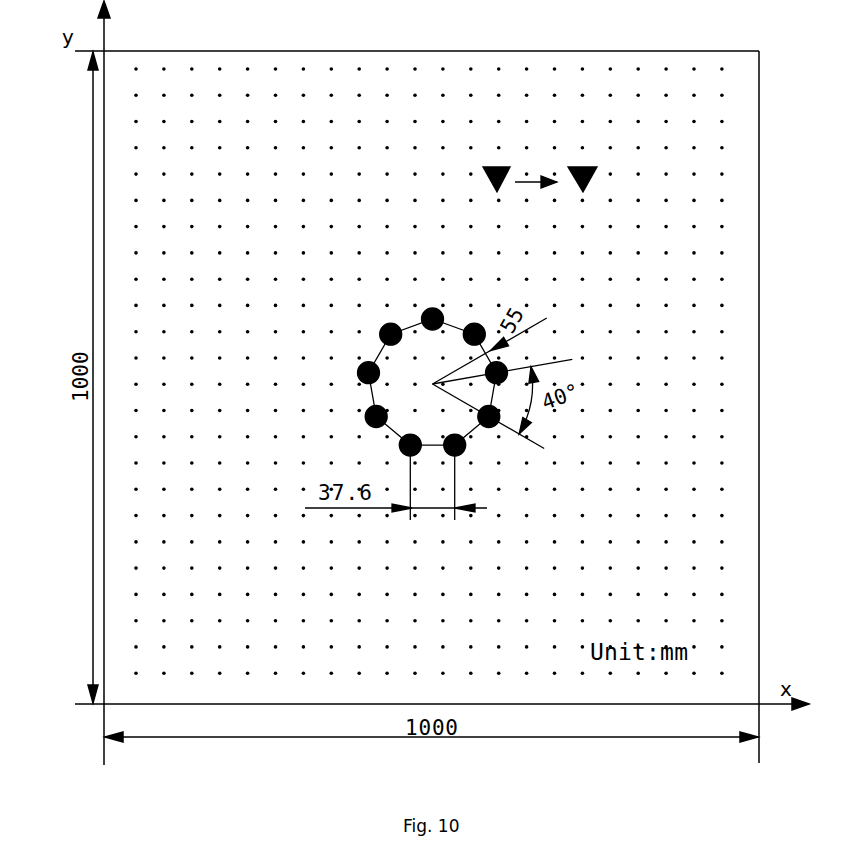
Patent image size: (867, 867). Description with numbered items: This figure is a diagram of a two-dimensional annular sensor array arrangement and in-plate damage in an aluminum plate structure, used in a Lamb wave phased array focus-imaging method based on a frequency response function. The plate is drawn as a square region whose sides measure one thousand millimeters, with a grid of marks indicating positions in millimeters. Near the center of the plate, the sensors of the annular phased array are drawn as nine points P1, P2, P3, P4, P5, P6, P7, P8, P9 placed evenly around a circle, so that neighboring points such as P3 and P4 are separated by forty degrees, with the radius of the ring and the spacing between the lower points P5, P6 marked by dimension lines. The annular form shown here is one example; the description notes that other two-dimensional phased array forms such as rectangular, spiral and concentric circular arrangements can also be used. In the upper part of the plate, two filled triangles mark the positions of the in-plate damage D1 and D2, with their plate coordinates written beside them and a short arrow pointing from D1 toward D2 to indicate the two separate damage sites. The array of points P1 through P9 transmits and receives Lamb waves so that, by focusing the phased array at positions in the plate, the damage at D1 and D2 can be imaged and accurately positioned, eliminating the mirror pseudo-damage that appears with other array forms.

The first measurement point P1 is at (435, 308).
The second measurement point P2 is at (481, 322).
The third measurement point P3 is at (511, 365).
The fourth measurement point P4 is at (500, 427).
The fifth measurement point P5 is at (459, 460).
The sixth measurement point P6 is at (403, 460).
The seventh measurement point P7 is at (369, 427).
The eighth measurement point P8 is at (355, 375).
The ninth measurement point P9 is at (381, 328).
The damage D1 is at (511, 166).
The damage D2 is at (607, 202).